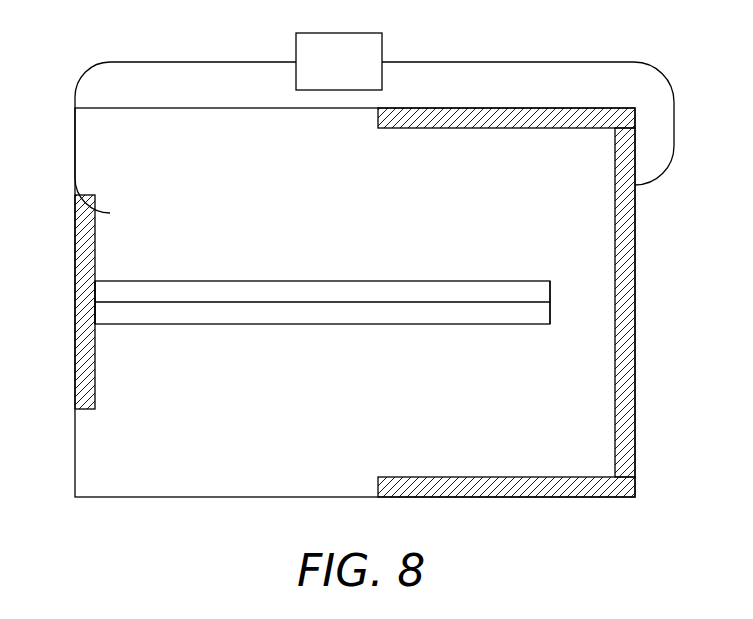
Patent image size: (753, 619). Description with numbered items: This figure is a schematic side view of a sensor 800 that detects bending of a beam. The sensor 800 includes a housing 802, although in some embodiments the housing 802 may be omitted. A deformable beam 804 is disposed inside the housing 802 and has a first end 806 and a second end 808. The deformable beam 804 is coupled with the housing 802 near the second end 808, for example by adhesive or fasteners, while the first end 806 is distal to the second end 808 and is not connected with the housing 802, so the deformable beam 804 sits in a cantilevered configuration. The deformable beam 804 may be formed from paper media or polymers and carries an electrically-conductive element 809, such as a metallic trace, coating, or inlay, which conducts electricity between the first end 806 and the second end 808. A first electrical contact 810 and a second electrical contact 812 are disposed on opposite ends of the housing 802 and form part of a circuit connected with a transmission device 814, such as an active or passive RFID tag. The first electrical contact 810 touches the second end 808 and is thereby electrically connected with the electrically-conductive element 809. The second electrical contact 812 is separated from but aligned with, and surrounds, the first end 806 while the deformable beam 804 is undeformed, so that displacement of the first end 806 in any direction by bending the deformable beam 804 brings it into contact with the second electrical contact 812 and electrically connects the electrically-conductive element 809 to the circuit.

The sensor 800 is at (572, 41).
The housing 802 is at (250, 108).
The deformable beam 804 is at (378, 281).
The first end 806 is at (550, 302).
The second end 808 is at (95, 281).
The electrically-conductive element 809 is at (300, 302).
The first electrical contact 810 is at (95, 378).
The second electrical contact 812 is at (526, 497).
The transmission device 814 is at (357, 74).